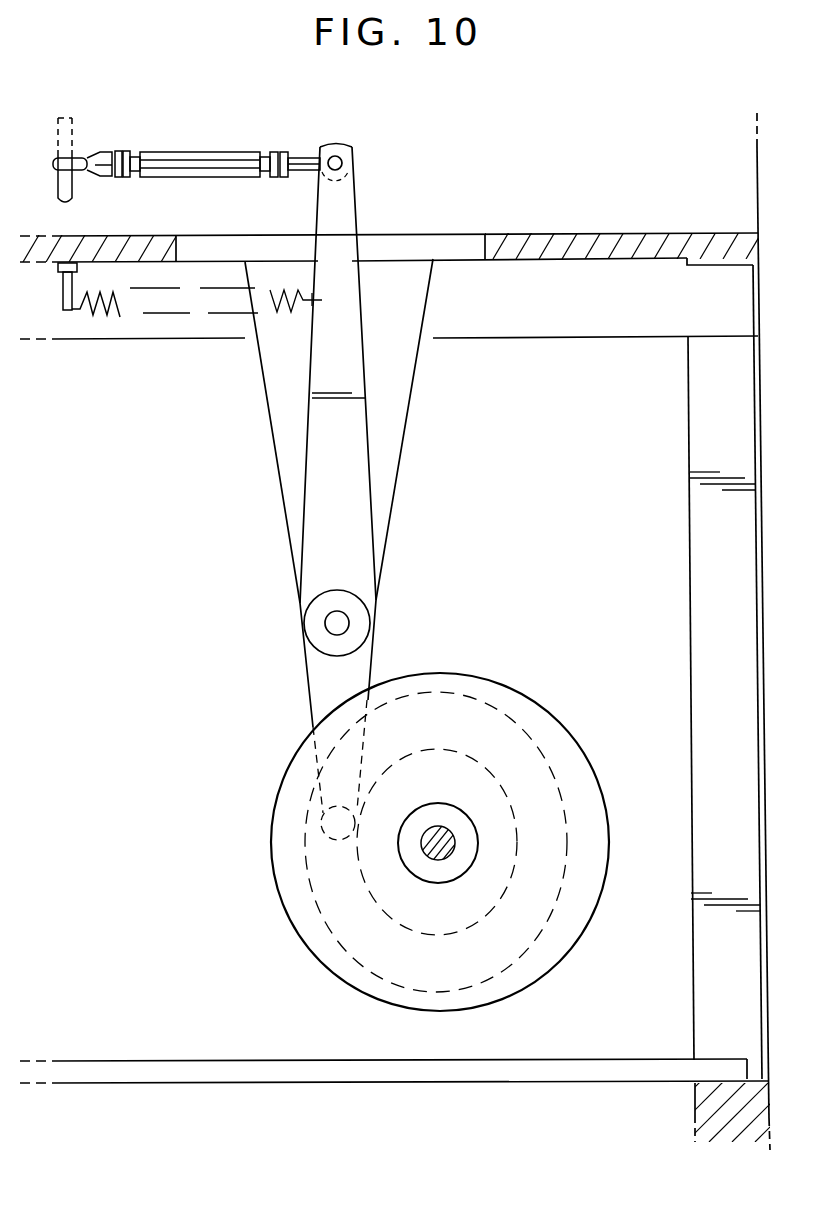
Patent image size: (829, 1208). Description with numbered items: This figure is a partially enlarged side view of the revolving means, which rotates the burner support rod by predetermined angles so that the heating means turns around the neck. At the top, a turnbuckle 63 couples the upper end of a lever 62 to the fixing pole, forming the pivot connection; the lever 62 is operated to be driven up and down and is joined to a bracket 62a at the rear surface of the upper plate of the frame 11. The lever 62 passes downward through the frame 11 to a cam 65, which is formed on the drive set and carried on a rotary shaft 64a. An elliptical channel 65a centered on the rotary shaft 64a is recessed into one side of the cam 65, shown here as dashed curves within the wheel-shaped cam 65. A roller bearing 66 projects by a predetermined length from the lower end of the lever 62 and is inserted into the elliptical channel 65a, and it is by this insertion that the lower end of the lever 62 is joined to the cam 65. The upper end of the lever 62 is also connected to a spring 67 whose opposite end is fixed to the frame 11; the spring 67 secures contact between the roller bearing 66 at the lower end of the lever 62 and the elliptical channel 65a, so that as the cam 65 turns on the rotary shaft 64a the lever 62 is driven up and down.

The frame 11 is at (582, 340).
The lever 62 is at (348, 317).
The bracket 62a is at (402, 408).
The turnbuckle 63 is at (192, 152).
The rotary shaft 64a is at (455, 838).
The cam 65 is at (563, 727).
The elliptical channel 65a is at (480, 717).
The roller bearing 66 is at (335, 823).
The spring 67 is at (92, 317).